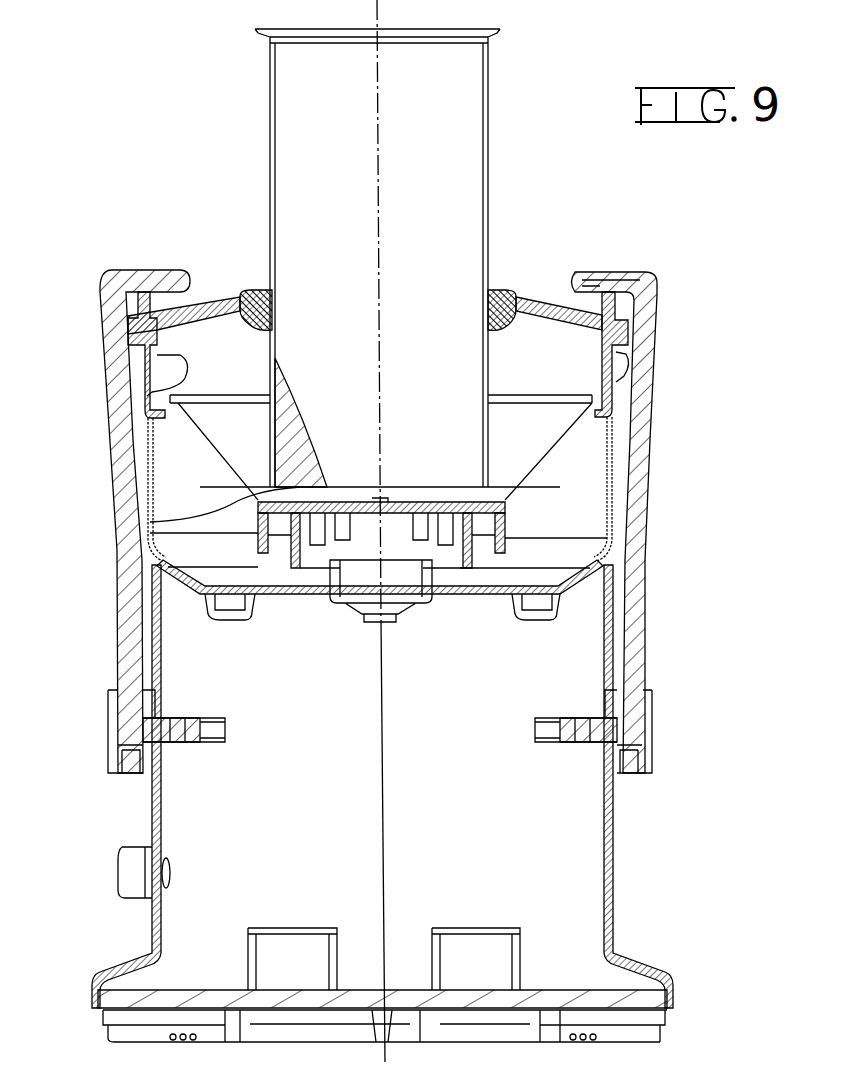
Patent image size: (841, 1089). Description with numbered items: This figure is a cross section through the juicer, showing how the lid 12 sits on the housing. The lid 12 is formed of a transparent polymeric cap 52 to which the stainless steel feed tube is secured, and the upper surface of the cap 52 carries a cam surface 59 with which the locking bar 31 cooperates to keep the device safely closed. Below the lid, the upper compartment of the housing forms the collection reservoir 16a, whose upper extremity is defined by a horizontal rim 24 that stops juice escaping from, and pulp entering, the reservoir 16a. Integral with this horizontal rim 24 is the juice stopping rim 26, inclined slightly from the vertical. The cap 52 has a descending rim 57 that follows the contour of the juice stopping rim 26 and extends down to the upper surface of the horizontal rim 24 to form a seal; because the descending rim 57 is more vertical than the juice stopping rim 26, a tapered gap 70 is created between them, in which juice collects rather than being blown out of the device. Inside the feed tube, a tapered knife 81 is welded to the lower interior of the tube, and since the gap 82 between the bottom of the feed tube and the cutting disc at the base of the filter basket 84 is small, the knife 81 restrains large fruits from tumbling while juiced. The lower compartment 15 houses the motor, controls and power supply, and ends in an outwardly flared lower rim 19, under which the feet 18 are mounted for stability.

The lid with feed tube 12 is at (556, 172).
The cam surface 59 is at (645, 268).
The polymeric cap 52 is at (262, 290).
The locking bar 31 is at (650, 308).
The gap 70 is at (650, 348).
The juice stopping rim 26 is at (618, 368).
The descending rim 57 is at (142, 393).
The tapered knife 81 is at (298, 435).
The horizontal rim 24 is at (617, 463).
The collection reservoir 16a is at (180, 494).
The filter basket 84 is at (180, 518).
The gap 82 is at (784, 506).
The lower compartment 15 is at (613, 853).
The lower rim 19 is at (675, 992).
The feet 18 is at (653, 1035).